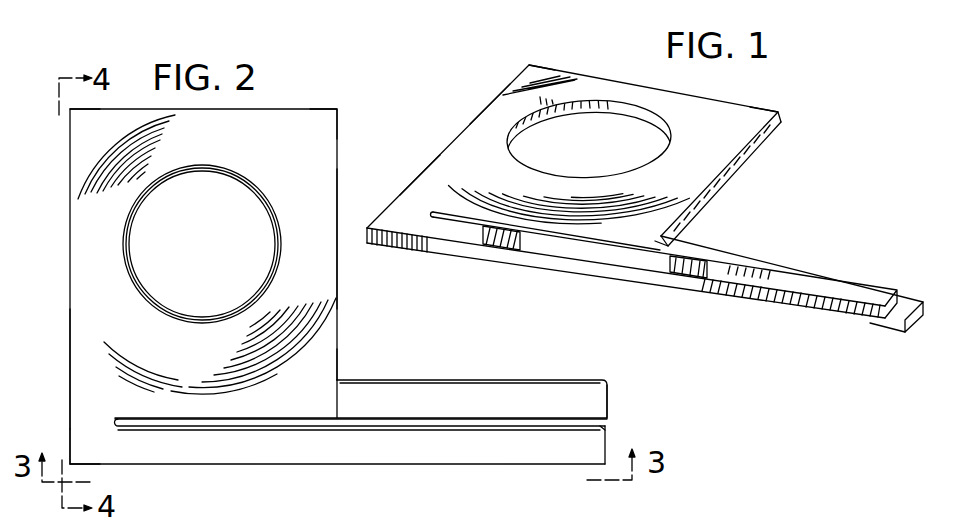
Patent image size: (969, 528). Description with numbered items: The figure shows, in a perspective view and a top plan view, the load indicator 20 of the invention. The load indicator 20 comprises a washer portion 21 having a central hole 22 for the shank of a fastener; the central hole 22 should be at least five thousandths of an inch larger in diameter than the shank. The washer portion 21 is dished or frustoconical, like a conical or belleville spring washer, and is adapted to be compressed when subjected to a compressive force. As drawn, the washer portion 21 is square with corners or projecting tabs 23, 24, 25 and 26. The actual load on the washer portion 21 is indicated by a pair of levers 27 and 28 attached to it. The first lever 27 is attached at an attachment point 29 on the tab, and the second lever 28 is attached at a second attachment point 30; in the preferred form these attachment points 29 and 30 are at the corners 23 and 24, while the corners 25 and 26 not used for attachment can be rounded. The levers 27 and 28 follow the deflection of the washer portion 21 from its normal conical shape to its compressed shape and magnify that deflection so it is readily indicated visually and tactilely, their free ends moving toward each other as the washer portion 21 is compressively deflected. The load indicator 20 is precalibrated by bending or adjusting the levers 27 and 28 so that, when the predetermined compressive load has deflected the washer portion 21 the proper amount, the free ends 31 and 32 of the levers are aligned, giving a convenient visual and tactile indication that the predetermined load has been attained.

In FIG. 2, the load indicator 20 is at (337, 299).
In FIG. 1, the load indicator 20 is at (738, 96).
In FIG. 2, the washer portion 21 is at (340, 239).
In FIG. 1, the washer portion 21 is at (500, 120).
In FIG. 2, the central hole 22 is at (203, 233).
In FIG. 1, the central hole 22 is at (602, 130).
In FIG. 2, the corner or projecting tab 23 is at (361, 345).
In FIG. 1, the corner or projecting tab 23 is at (690, 212).
In FIG. 2, the corner or projecting tab 24 is at (18, 289).
In FIG. 1, the corner or projecting tab 24 is at (425, 197).
In FIG. 2, the corner or projecting tab 25 is at (350, 119).
In FIG. 1, the corner or projecting tab 25 is at (781, 119).
In FIG. 2, the corner or projecting tab 26 is at (56, 124).
In FIG. 1, the corner or projecting tab 26 is at (533, 76).
In FIG. 2, the first lever 27 is at (361, 378).
In FIG. 1, the first lever 27 is at (760, 262).
In FIG. 2, the second lever 28 is at (361, 464).
In FIG. 1, the second lever 28 is at (647, 268).
In FIG. 2, the attachment point 29 is at (367, 383).
In FIG. 1, the attachment point 29 is at (677, 237).
In FIG. 2, the second attachment point 30 is at (56, 435).
In FIG. 1, the second attachment point 30 is at (397, 222).
In FIG. 2, the free end of first lever 31 is at (634, 391).
In FIG. 1, the free end of first lever 31 is at (915, 322).
In FIG. 2, the free end of second lever 32 is at (394, 437).
In FIG. 1, the free end of second lever 32 is at (893, 307).